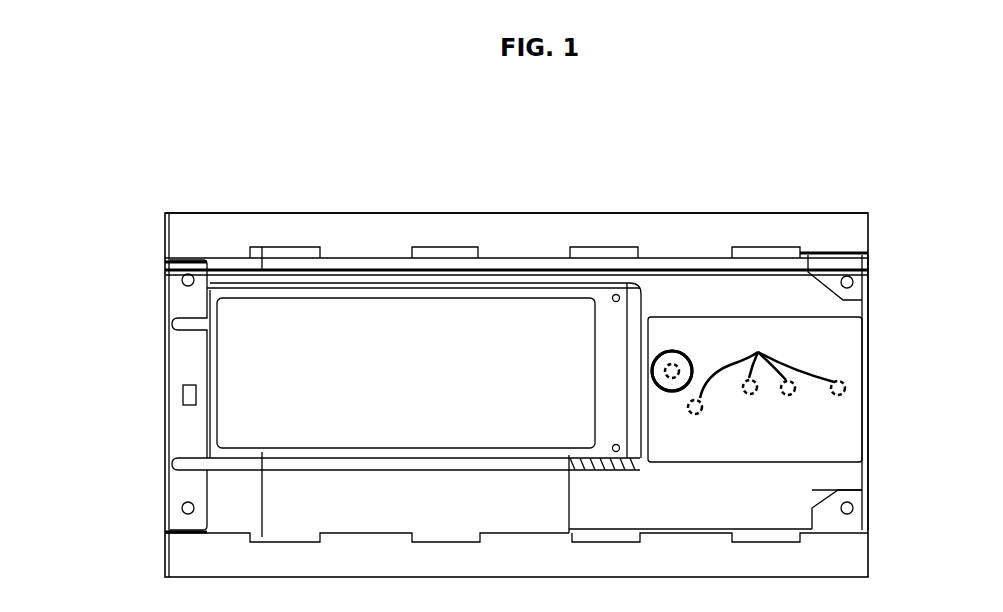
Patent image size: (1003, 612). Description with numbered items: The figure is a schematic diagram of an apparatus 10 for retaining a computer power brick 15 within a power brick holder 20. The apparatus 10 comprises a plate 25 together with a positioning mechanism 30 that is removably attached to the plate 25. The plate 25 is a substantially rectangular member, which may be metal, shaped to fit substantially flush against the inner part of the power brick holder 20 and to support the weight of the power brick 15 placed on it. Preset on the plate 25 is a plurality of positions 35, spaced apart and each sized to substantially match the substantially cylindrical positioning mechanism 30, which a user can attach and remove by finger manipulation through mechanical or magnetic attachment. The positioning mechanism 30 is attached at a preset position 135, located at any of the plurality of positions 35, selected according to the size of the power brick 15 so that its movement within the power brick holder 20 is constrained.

The apparatus 10 is at (730, 470).
The computer power brick 15 is at (350, 330).
The power brick holder 20 is at (418, 226).
The plate 25 is at (832, 342).
The positioning mechanism 30 is at (672, 351).
The plurality of positions 35 is at (758, 352).
The preset position 135 is at (677, 387).